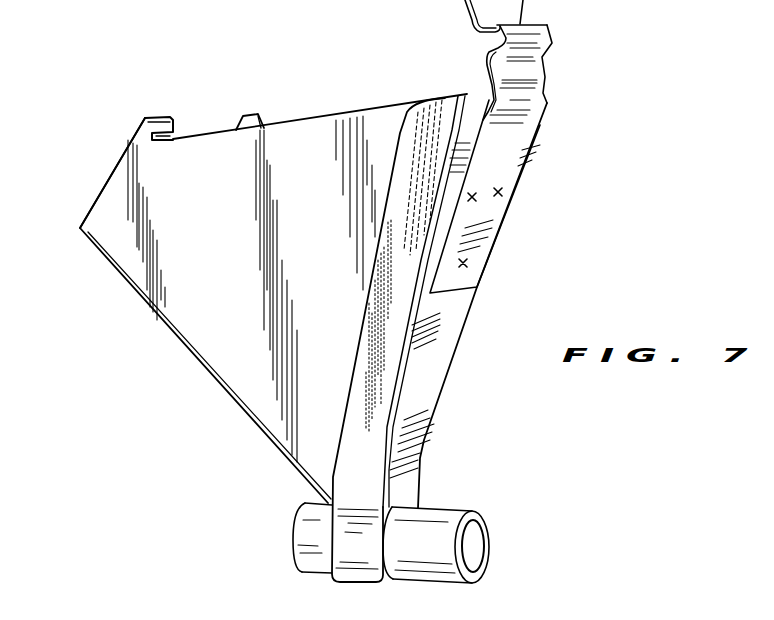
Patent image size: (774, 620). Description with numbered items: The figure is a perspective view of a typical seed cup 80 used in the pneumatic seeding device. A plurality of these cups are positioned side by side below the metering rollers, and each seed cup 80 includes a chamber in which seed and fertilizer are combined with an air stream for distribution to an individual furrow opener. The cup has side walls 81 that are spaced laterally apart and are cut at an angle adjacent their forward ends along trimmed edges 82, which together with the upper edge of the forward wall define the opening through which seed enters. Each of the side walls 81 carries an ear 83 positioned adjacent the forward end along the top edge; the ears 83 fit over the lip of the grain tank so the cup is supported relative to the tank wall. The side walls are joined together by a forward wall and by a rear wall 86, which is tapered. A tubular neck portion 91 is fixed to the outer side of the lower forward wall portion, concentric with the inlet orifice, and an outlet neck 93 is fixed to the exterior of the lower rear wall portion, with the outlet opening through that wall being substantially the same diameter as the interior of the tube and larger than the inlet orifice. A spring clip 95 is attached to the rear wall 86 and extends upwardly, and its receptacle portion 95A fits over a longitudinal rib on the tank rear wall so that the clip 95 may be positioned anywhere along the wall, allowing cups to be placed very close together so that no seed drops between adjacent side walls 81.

The seed cup 80 is at (175, 336).
The side wall 81 is at (313, 133).
The trimmed edge 82 is at (116, 172).
The ear 83 is at (171, 116).
The rear wall 86 is at (428, 384).
The tubular neck portion 91 is at (305, 537).
The outlet neck 93 is at (443, 517).
The spring clip 95 is at (535, 95).
The receptacle portion 95A is at (545, 33).